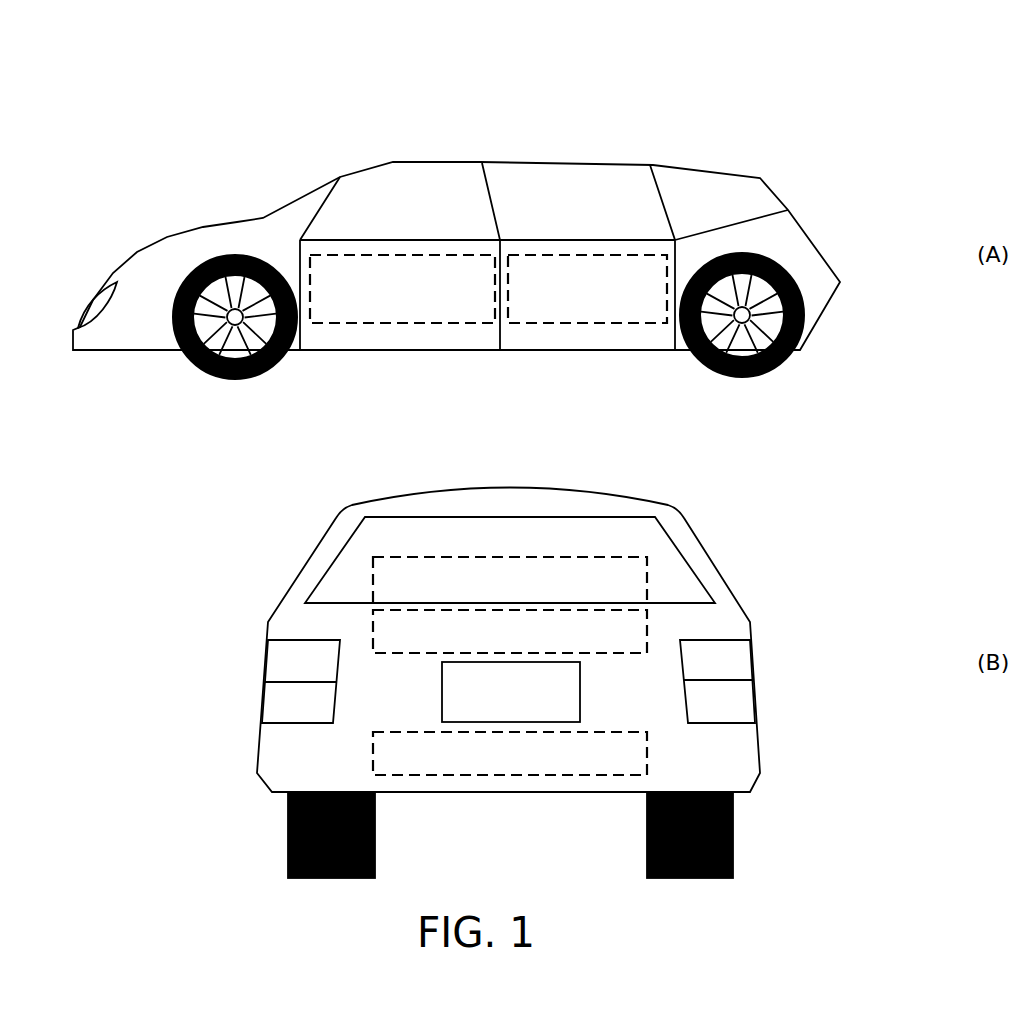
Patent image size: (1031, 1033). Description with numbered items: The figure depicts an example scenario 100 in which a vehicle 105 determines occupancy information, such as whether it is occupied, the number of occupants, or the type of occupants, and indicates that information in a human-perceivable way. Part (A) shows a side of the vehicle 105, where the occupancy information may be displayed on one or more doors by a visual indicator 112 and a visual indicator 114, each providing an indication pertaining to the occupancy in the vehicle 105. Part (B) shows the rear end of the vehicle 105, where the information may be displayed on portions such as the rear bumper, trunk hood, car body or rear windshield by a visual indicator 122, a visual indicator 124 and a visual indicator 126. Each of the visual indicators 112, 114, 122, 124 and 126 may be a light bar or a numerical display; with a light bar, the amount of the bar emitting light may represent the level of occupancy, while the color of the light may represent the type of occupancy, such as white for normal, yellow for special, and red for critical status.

The example scenario 100 is at (317, 68).
The vehicle 105 is at (545, 161).
The visual indicator 112 is at (400, 323).
The visual indicator 114 is at (588, 323).
The visual indicator 122 is at (647, 558).
The visual indicator 124 is at (647, 635).
The visual indicator 126 is at (647, 763).